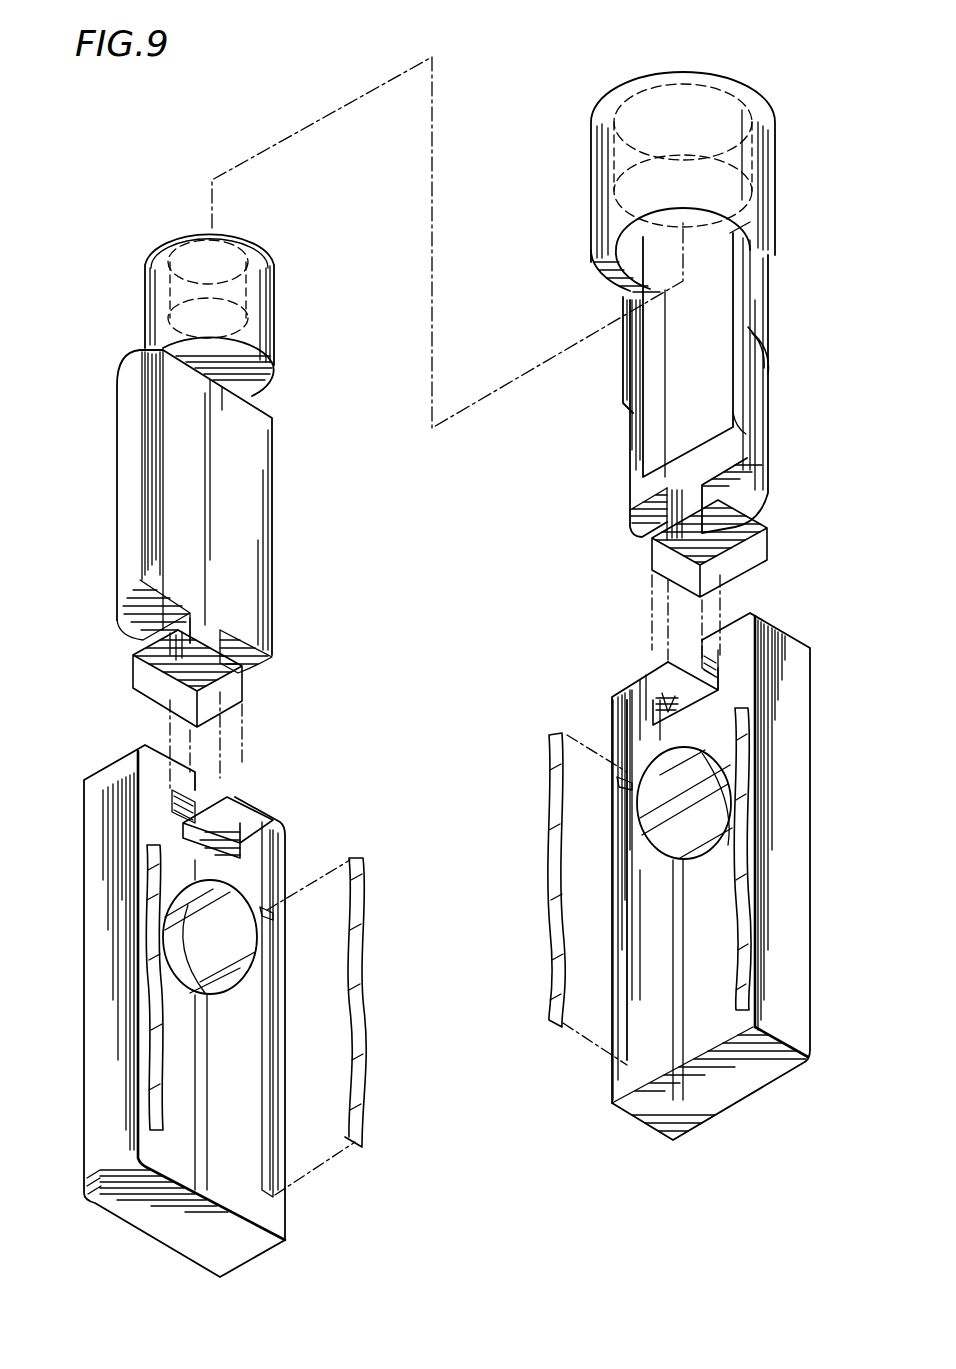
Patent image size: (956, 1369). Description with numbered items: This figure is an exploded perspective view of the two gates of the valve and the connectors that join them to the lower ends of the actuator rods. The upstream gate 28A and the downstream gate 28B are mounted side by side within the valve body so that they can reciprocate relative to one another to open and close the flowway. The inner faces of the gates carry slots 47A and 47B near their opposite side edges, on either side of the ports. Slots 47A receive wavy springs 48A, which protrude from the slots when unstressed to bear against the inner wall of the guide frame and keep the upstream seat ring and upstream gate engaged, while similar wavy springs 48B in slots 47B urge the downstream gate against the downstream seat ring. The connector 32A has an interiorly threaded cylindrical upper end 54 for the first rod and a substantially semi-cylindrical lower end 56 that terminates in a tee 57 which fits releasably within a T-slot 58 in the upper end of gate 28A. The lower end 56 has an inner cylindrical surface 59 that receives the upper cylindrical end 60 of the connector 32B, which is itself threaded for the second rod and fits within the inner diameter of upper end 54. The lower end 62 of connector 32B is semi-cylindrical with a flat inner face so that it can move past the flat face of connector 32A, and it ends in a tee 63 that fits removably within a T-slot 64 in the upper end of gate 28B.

The cylindrical upper end 54 is at (590, 172).
The connector 32A is at (770, 268).
The inner cylindrical surface 59 is at (657, 393).
The semi-cylindrical lower end 56 is at (768, 413).
The tee 57 is at (769, 533).
The T-slot 58 is at (680, 664).
The upstream gate 28A is at (812, 758).
The slots 47A is at (620, 868).
The wavy springs 48A is at (548, 962).
The upper cylindrical end 60 is at (144, 287).
The connector 32B is at (116, 434).
The lower end 62 is at (116, 541).
The tee 63 is at (243, 689).
The T-slot 64 is at (240, 833).
The downstream gate 28B is at (84, 875).
The wavy springs 48B is at (143, 1023).
The slots 47B is at (268, 1040).